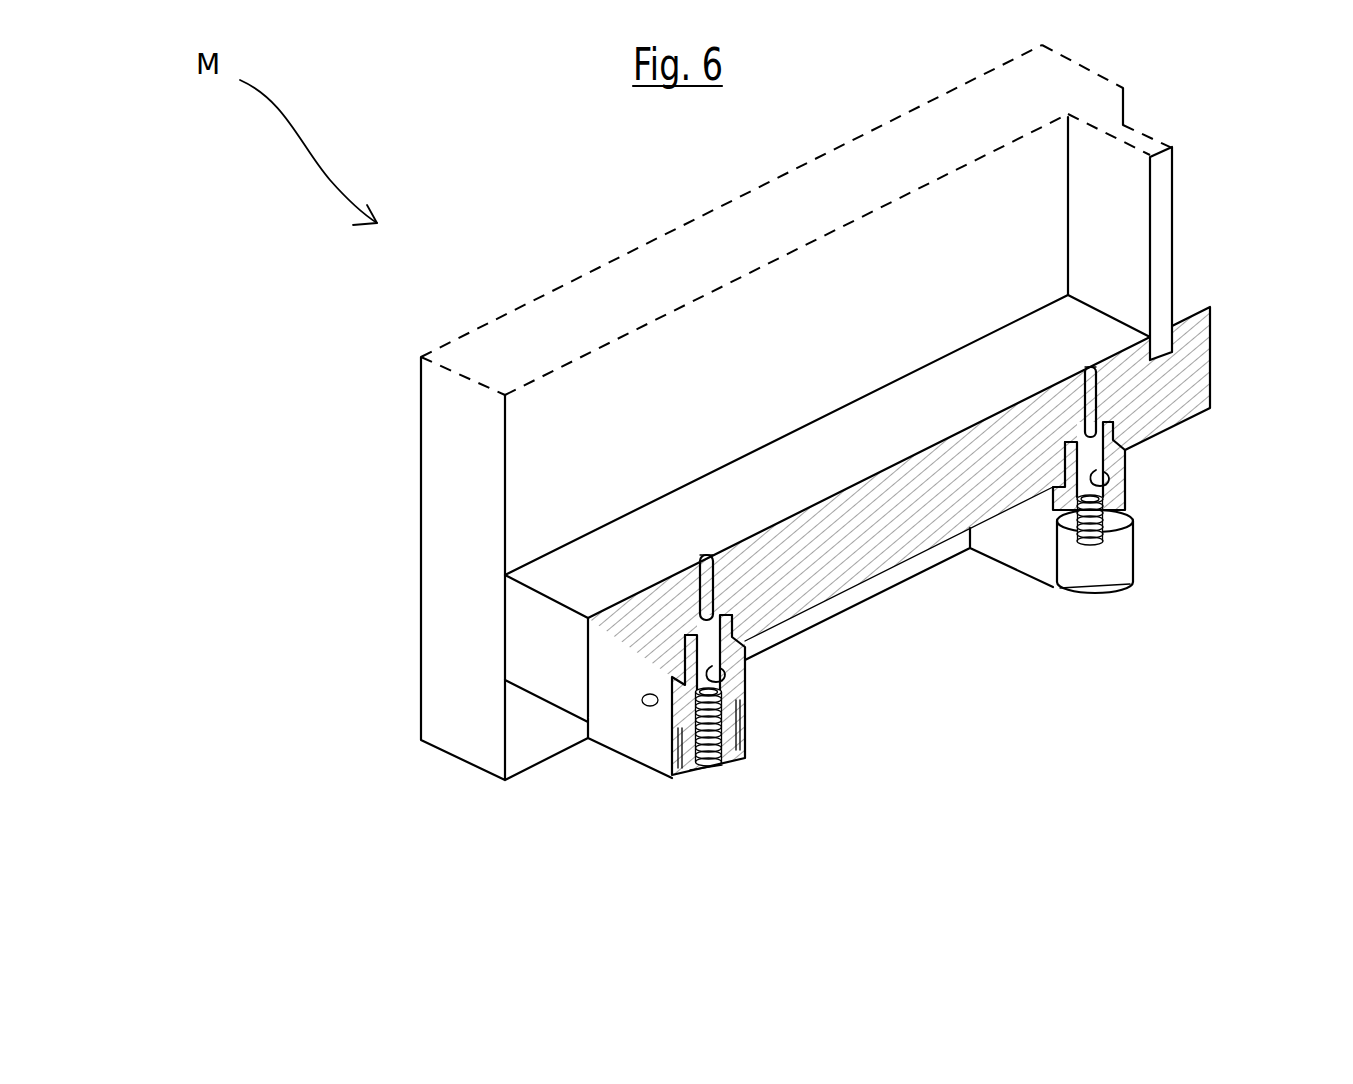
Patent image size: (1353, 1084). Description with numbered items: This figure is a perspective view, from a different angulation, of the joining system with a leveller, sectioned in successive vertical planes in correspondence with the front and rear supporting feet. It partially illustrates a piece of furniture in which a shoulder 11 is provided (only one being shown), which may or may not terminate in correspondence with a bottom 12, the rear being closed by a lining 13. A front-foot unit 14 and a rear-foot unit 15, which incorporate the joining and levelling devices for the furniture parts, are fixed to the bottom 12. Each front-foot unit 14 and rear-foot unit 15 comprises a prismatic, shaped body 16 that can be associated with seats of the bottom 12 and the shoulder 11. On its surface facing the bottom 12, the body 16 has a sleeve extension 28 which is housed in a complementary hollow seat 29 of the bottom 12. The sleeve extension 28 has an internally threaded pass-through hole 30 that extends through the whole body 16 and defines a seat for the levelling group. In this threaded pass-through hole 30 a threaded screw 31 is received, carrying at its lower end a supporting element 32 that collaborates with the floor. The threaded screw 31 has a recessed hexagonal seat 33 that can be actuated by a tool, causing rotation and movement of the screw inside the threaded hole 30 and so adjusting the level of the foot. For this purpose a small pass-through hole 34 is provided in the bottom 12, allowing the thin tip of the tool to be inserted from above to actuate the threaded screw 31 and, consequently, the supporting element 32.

The shoulder 11 is at (423, 417).
The bottom 12 is at (1203, 362).
The lining 13 is at (1165, 210).
The front-foot unit 14 is at (760, 733).
The rear-foot unit 15 is at (1128, 607).
The body 16 is at (620, 752).
The sleeve extension 28 is at (732, 632).
The hollow seat 29 is at (712, 618).
The pass-through hole 30 is at (722, 680).
The threaded screw 31 is at (717, 767).
The supporting element 32 is at (688, 787).
The recessed hexagonal seat 33 is at (722, 692).
The small pass-through hole 34 is at (714, 578).